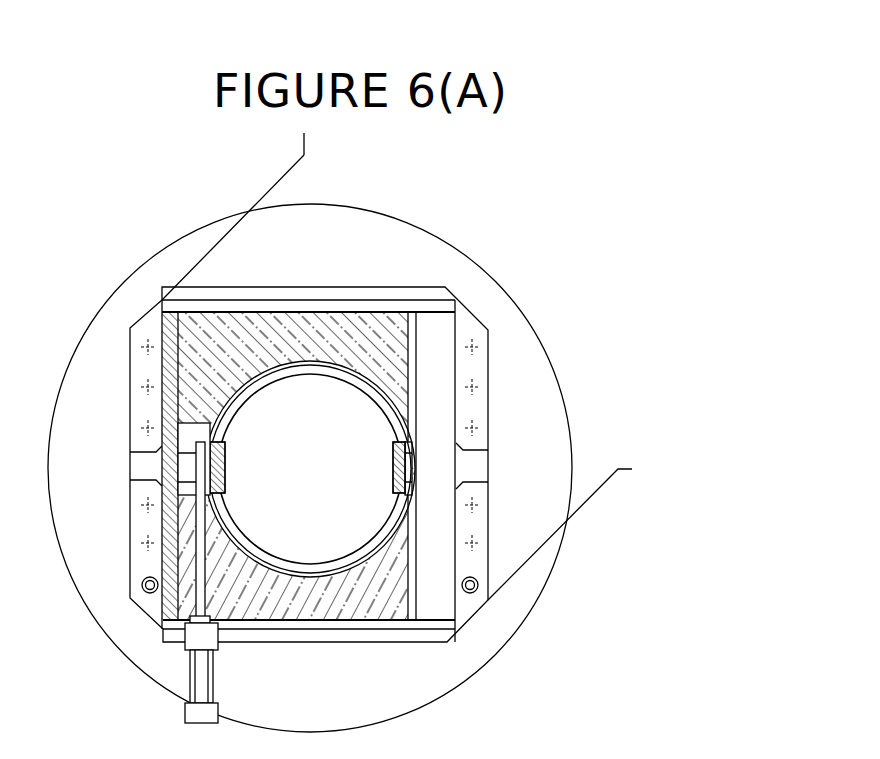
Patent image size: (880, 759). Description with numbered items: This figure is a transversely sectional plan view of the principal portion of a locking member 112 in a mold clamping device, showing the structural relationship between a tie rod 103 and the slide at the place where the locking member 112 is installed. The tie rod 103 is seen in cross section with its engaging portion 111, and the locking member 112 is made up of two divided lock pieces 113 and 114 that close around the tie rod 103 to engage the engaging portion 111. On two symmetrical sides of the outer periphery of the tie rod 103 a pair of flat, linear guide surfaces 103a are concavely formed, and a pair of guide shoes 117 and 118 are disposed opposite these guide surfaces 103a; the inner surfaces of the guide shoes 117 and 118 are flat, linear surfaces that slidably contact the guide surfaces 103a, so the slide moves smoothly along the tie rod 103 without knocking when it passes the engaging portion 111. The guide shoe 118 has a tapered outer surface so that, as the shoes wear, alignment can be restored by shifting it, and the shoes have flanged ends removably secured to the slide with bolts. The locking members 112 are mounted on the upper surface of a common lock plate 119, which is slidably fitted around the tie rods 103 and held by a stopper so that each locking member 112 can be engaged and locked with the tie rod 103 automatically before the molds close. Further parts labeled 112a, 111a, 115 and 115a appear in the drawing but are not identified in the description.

The lock plate 119 is at (304, 143).
The left side plate 112a is at (158, 333).
The locking member 112 is at (492, 329).
The divided lock piece 114 is at (243, 336).
The divided lock piece 113 is at (395, 594).
The outer sleeve 111a is at (315, 360).
The engaging portion 111 is at (335, 377).
The tie rod 103 is at (357, 412).
The guide surfaces 103a is at (227, 466).
The guide shoe 117 is at (200, 463).
The guide shoe 118 is at (410, 472).
The rod 115a is at (187, 522).
The bolt 115 is at (190, 683).